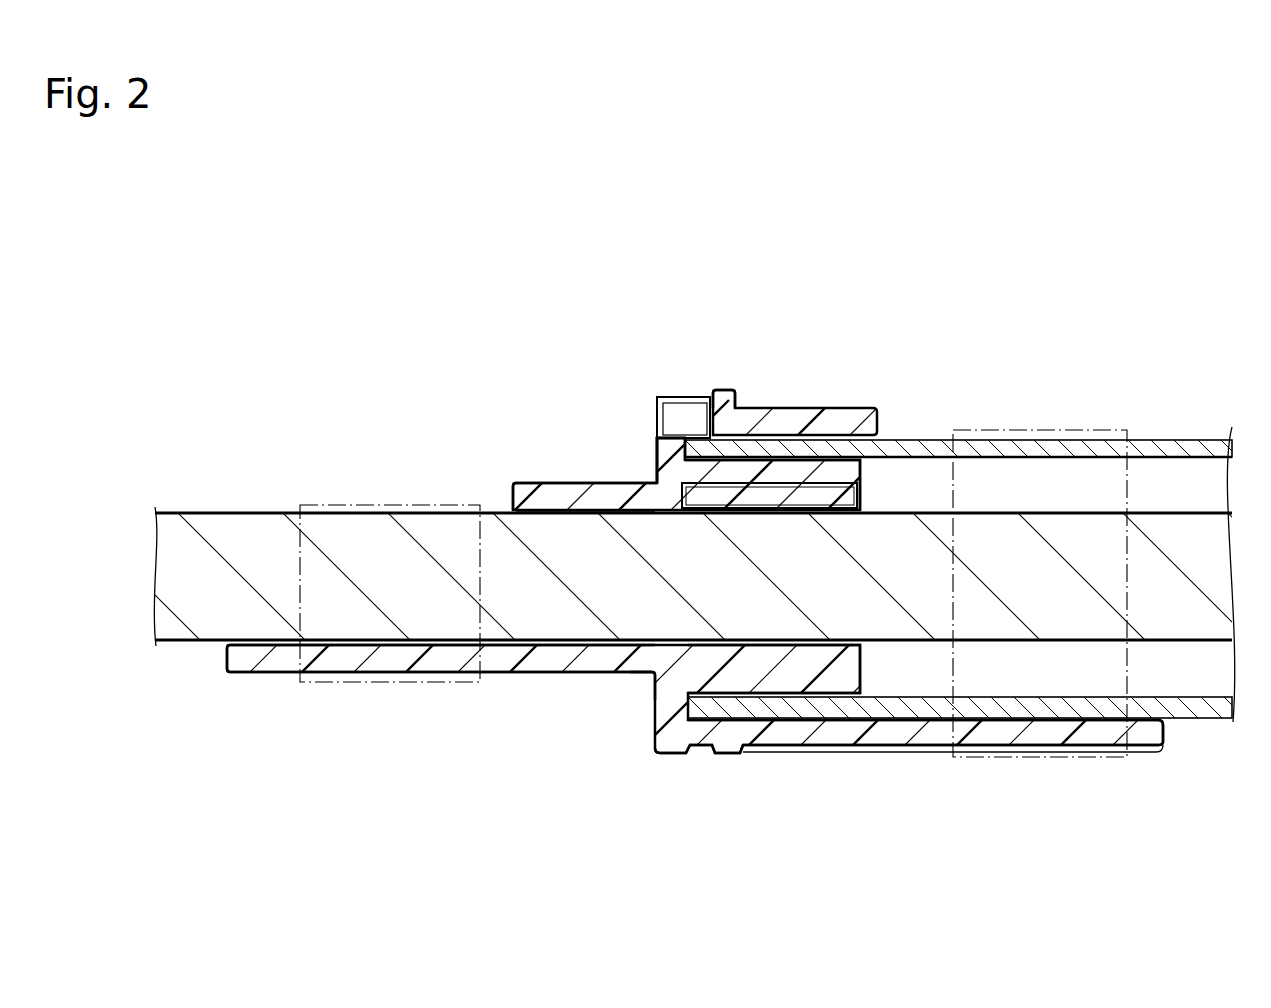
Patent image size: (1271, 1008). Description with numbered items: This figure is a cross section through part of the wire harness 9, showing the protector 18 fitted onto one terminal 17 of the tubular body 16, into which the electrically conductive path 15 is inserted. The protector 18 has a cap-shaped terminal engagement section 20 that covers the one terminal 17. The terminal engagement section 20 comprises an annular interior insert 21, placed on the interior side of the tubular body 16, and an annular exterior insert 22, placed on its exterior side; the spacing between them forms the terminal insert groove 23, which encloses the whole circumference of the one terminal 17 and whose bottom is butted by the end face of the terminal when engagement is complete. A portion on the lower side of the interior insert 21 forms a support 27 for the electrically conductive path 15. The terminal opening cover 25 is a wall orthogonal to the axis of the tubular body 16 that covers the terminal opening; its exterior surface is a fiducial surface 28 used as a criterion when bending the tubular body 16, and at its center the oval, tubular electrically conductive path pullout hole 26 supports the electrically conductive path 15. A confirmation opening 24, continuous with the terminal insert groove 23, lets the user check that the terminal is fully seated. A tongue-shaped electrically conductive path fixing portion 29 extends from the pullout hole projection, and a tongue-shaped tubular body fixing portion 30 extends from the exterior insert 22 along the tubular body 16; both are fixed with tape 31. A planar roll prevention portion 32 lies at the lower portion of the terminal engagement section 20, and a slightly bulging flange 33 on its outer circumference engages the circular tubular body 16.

The wire harness 9 is at (300, 362).
The electrically conductive path 15 is at (295, 504).
The tubular body 16 is at (1182, 436).
The one terminal 17 is at (656, 702).
The protector 18 is at (565, 476).
The terminal engagement section 20 is at (673, 473).
The interior insert 21 is at (848, 470).
The exterior insert 22 is at (836, 418).
The terminal insert groove 23 is at (813, 708).
The confirmation opening 24 is at (695, 418).
The terminal opening cover 25 is at (662, 452).
The electrically conductive path pullout hole 26 is at (556, 520).
The support 27 is at (852, 683).
The fiducial surface 28 is at (653, 694).
The electrically conductive path fixing portion 29 is at (272, 663).
The tubular body fixing portion 30 is at (1100, 731).
The tape 31 is at (382, 683).
The roll prevention portion 32 is at (675, 758).
The flange 33 is at (716, 430).